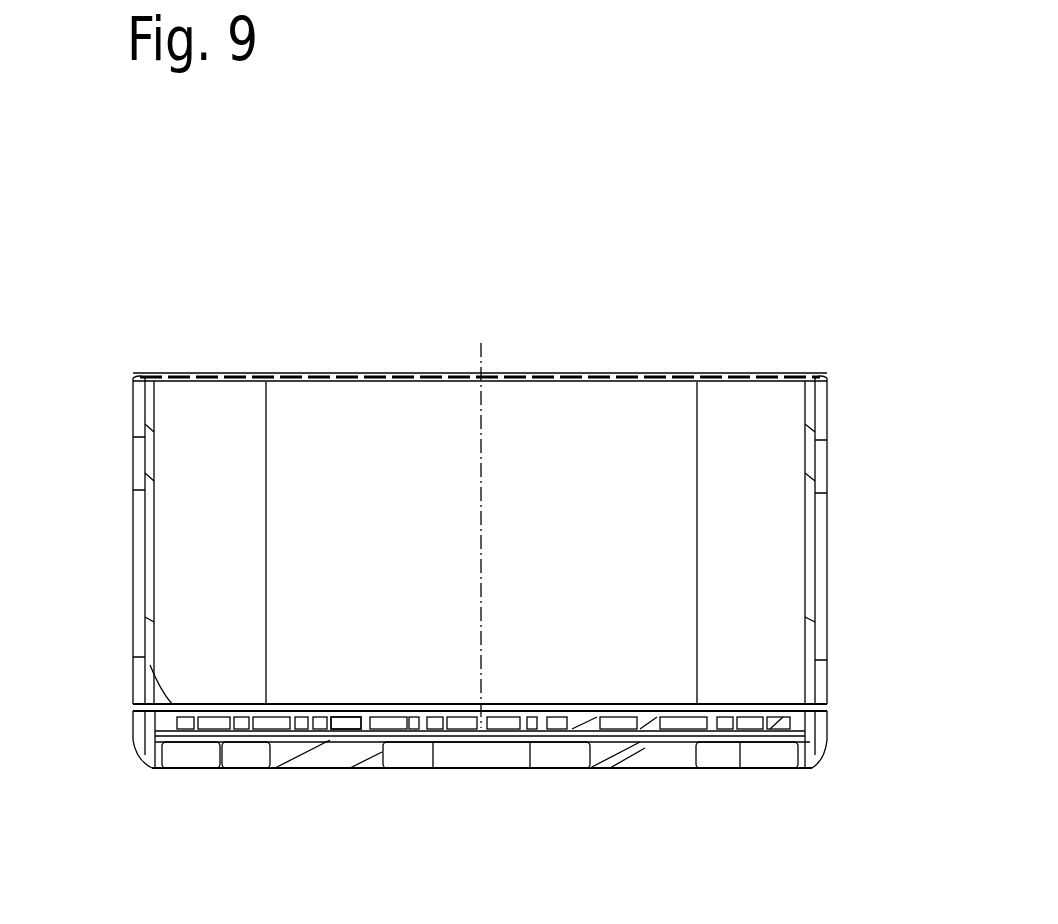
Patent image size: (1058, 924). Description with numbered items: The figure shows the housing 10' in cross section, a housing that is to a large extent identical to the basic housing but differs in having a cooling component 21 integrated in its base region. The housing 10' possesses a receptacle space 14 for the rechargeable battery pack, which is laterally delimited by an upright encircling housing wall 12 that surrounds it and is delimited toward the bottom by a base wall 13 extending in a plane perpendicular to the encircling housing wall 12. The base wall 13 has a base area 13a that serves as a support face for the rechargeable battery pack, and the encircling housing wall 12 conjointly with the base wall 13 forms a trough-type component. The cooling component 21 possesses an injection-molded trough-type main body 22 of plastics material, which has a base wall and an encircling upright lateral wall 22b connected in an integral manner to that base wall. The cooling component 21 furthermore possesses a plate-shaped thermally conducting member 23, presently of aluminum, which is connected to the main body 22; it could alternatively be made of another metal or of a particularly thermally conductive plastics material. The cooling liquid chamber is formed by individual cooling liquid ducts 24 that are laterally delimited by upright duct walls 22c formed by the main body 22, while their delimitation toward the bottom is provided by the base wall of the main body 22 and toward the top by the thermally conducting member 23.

The housing 10' is at (480, 410).
The encircling housing wall 12 is at (812, 568).
The base wall 13 is at (660, 750).
The base area 13a is at (607, 745).
The receptacle space 14 is at (581, 450).
The cooling component 21 is at (150, 724).
The main body 22 is at (828, 727).
The lateral wall 22b is at (136, 661).
The duct walls 22c is at (345, 706).
The thermally conducting member 23 is at (210, 706).
The cooling liquid ducts 24 is at (730, 745).